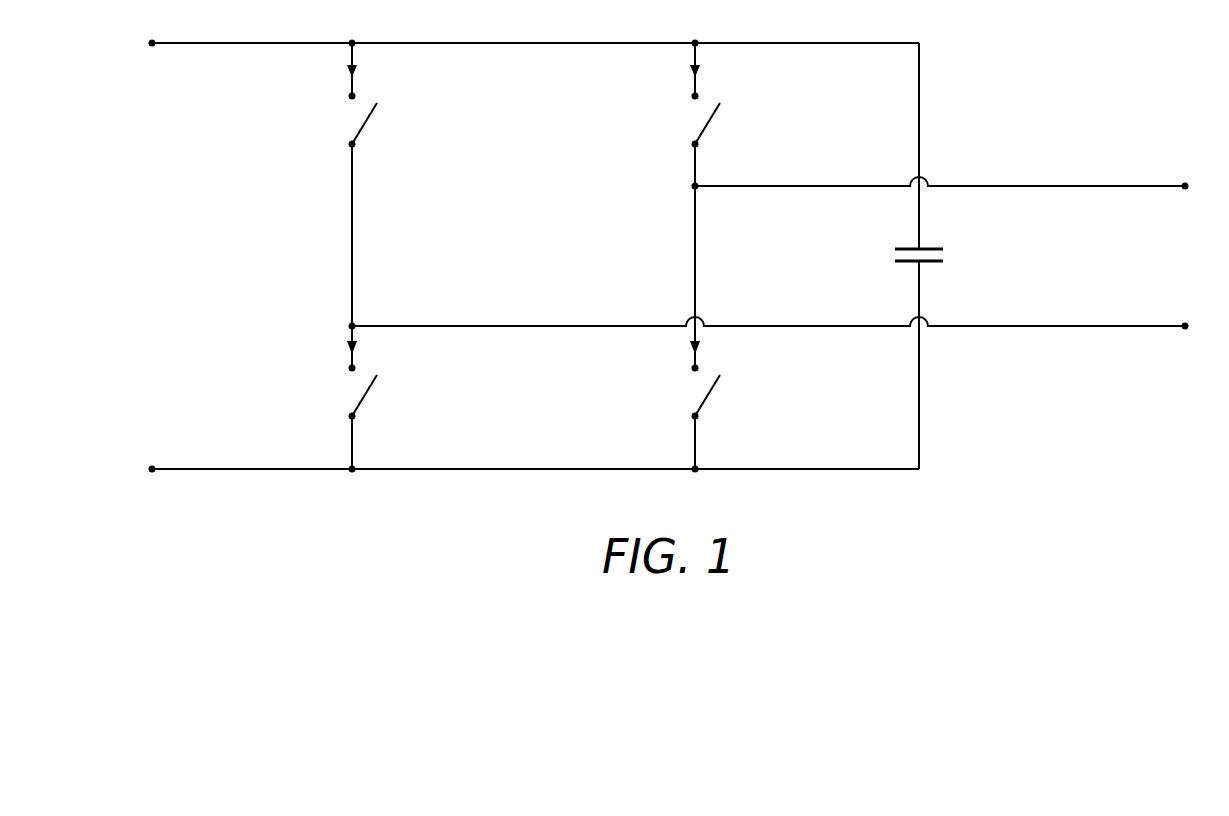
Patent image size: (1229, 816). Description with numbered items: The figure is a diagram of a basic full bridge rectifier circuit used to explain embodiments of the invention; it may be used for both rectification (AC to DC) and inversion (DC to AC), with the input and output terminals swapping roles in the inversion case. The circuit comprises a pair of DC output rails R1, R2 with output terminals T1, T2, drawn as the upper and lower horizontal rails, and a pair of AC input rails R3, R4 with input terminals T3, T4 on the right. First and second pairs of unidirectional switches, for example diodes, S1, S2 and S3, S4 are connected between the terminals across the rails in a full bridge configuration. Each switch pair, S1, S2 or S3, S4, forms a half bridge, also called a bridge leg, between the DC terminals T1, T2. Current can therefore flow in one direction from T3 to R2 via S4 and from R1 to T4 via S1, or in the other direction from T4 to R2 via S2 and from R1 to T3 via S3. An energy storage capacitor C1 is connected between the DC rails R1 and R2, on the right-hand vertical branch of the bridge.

The output terminal T1 is at (234, 43).
The output terminal T2 is at (234, 470).
The input terminal T3 is at (1201, 185).
The input terminal T4 is at (1201, 326).
The unidirectional switch S1 is at (377, 184).
The unidirectional switch S2 is at (378, 396).
The unidirectional switch S3 is at (720, 116).
The unidirectional switch S4 is at (720, 327).
The DC output rail R1 is at (634, 31).
The DC output rail R2 is at (634, 482).
The AC input rail R3 is at (940, 172).
The AC input rail R4 is at (768, 336).
The energy storage capacitor C1 is at (936, 256).